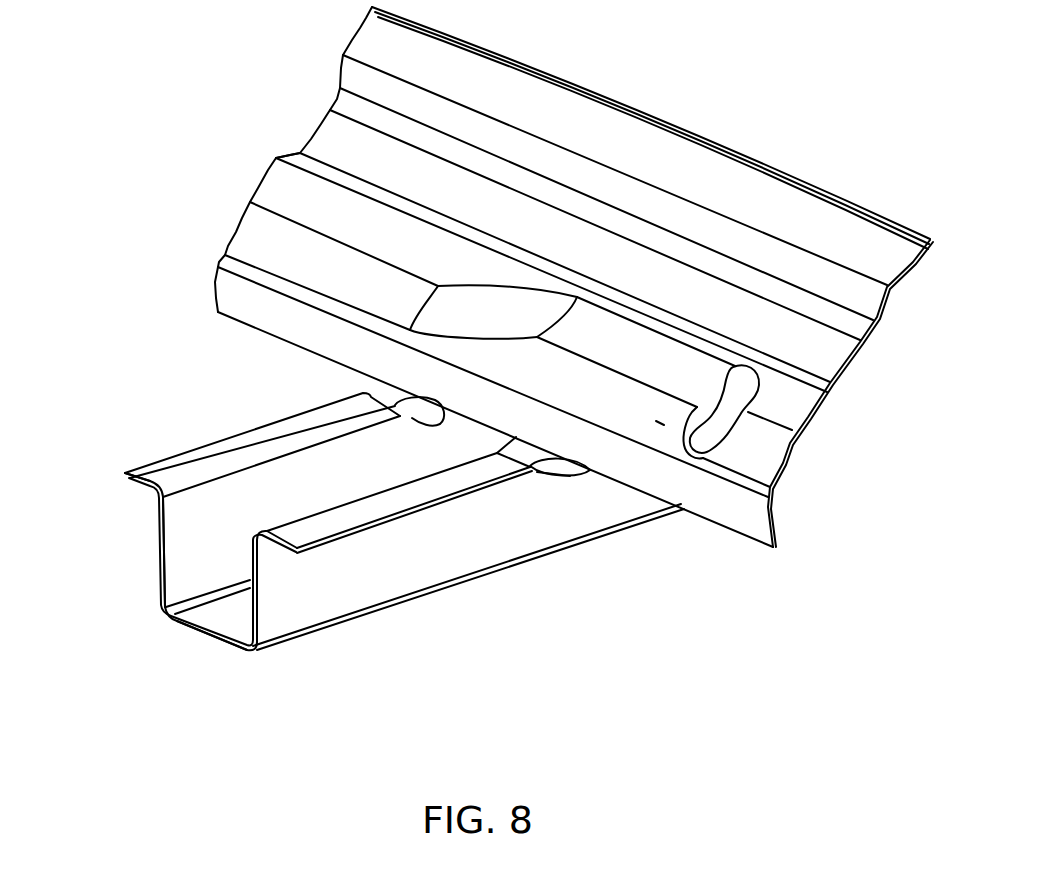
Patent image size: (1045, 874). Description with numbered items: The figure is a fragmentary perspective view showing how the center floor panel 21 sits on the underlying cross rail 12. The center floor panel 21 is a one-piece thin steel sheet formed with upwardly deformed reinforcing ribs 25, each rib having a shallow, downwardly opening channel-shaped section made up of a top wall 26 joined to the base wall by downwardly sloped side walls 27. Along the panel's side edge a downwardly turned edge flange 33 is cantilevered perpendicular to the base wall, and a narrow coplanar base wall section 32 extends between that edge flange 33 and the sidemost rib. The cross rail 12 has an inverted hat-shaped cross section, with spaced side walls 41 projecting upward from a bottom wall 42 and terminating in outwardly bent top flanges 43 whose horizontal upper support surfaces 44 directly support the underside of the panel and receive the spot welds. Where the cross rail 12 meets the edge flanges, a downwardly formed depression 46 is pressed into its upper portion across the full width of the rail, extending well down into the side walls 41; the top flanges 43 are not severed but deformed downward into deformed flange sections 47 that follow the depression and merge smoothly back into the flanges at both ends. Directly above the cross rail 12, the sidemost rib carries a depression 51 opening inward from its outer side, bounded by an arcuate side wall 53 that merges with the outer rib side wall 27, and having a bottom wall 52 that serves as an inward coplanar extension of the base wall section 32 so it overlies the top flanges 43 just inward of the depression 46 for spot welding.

The center floor panel 21 is at (770, 137).
The reinforcing ribs 25 is at (270, 180).
The top wall 26 is at (281, 192).
The side walls 27 is at (258, 242).
The base wall section 32 is at (762, 488).
The edge flange 33 is at (733, 514).
The depression 51 is at (655, 375).
The bottom wall 52 is at (660, 423).
The side wall 53 is at (495, 312).
The cross rail 12 is at (432, 619).
The side walls 41 is at (183, 523).
The bottom wall 42 is at (223, 626).
The top flanges 43 is at (125, 476).
The upper support surfaces 44 is at (188, 462).
The depression 46 is at (428, 413).
The deformed flange sections 47 is at (553, 473).